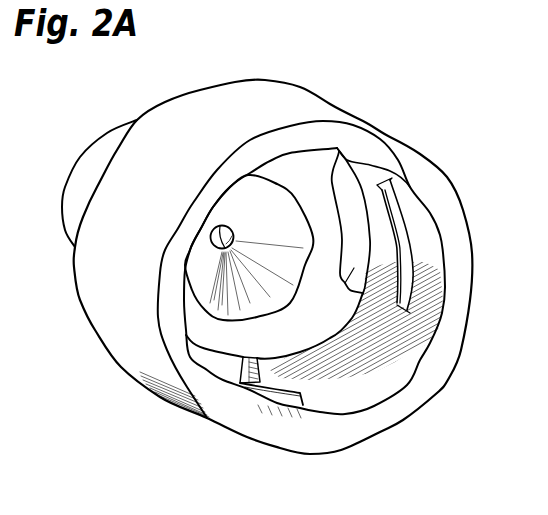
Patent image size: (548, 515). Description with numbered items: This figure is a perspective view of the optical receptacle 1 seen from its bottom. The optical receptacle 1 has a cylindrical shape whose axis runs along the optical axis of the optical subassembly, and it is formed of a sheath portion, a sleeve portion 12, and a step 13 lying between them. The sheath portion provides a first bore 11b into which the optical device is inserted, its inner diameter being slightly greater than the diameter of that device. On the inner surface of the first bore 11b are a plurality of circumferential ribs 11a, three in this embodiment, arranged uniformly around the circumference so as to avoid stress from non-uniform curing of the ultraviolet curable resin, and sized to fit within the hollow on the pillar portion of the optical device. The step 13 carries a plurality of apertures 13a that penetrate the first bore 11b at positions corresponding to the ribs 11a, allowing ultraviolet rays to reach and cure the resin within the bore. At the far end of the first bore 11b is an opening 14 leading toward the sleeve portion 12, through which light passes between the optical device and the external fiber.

The optical receptacle 1 is at (381, 105).
The circumferential ribs 11a is at (407, 230).
The first bore 11b is at (408, 360).
The sleeve portion 12 is at (82, 163).
The step 13 is at (304, 346).
The apertures 13a is at (345, 283).
The opening 14 is at (234, 237).